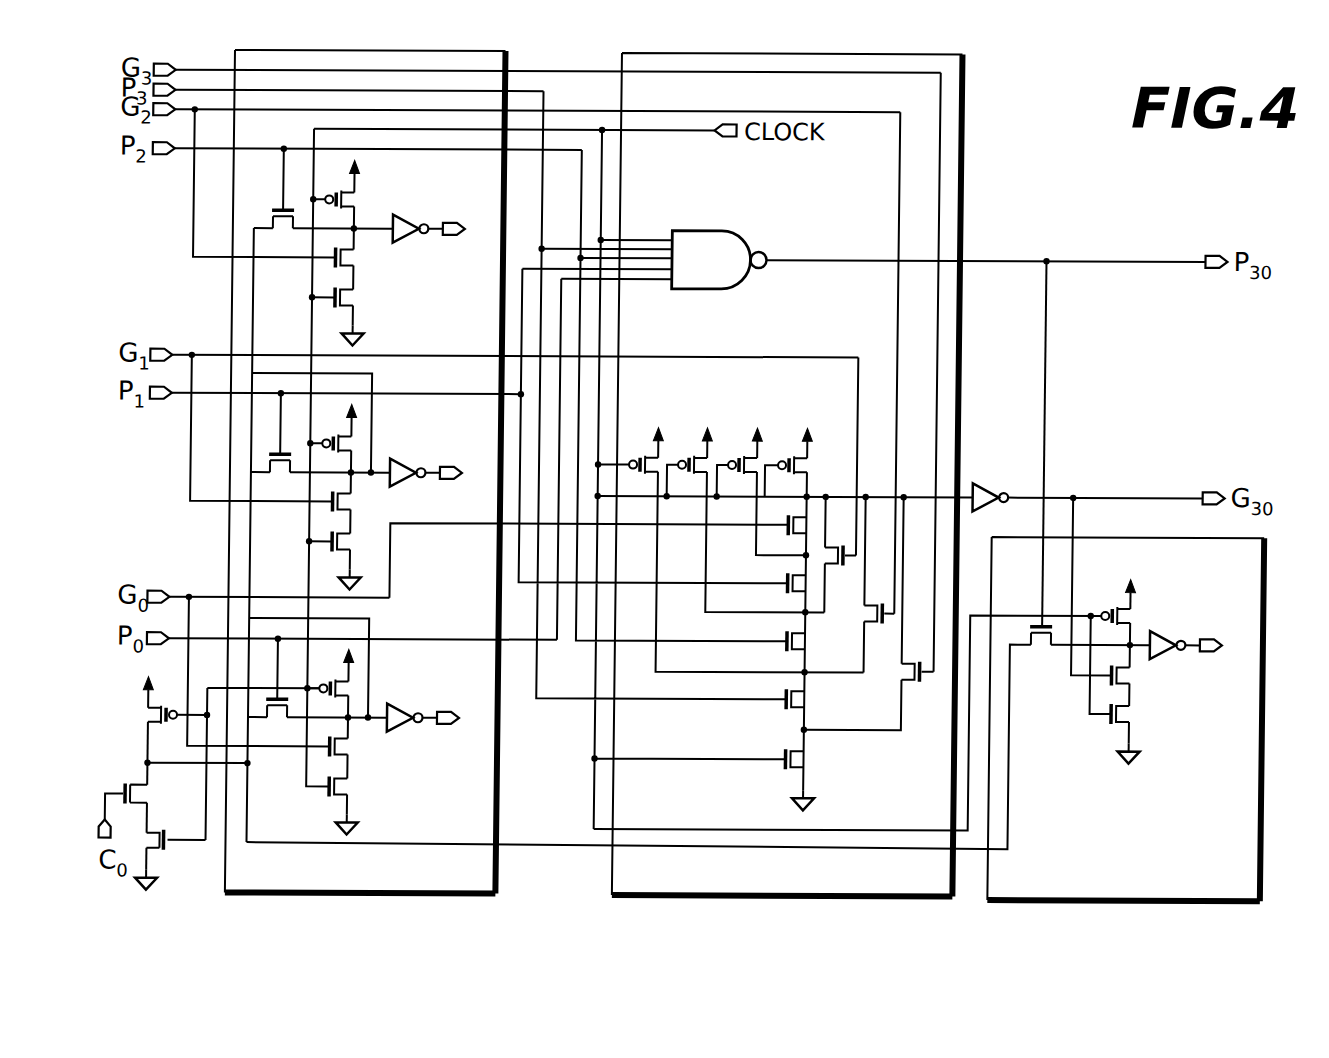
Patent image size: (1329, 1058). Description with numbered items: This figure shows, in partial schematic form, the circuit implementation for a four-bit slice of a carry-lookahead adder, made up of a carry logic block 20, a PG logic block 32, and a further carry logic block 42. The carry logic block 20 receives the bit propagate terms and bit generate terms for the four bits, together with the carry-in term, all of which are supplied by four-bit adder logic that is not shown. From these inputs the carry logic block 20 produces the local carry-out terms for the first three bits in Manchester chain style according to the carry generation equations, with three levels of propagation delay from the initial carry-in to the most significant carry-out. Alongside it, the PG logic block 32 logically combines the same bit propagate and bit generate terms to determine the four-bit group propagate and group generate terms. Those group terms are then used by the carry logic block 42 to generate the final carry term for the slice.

The carry logic block 20 is at (506, 778).
The PG logic block 32 is at (966, 215).
The carry logic block 42 is at (1272, 741).